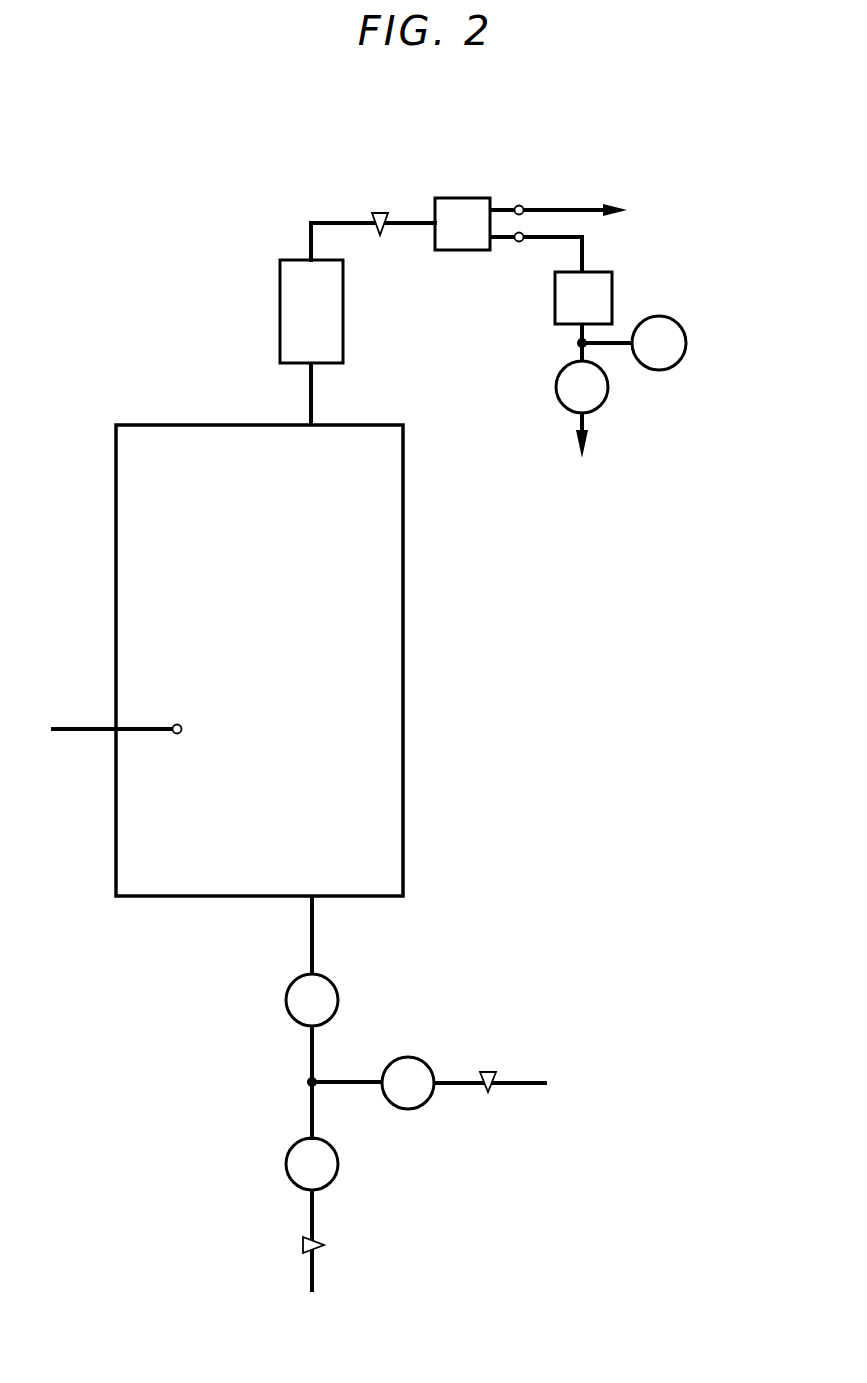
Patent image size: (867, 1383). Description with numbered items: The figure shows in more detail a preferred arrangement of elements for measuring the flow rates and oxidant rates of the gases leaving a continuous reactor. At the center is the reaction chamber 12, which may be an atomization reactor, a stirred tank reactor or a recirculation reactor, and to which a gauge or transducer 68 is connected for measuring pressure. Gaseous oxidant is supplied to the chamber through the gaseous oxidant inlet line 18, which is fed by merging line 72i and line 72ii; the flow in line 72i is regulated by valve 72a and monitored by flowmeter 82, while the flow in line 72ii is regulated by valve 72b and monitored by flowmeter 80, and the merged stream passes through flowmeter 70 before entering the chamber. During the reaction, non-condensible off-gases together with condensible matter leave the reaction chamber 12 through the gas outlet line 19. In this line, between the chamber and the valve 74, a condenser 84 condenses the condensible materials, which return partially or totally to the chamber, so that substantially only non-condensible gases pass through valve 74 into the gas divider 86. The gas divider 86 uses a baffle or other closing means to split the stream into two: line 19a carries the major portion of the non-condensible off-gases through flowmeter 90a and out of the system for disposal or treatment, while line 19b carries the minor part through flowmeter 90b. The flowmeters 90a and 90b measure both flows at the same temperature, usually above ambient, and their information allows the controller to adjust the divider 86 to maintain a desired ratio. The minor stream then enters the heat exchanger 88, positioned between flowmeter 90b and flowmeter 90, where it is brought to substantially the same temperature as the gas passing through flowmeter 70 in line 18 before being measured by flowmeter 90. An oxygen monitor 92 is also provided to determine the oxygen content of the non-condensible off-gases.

The reaction chamber 12 is at (116, 514).
The gaseous oxidant feeding or inlet line 18 is at (312, 950).
The gas outlet line 19 is at (311, 240).
The line 19a is at (577, 210).
The line 19b is at (586, 253).
The gauge or transducer 68 is at (181, 726).
The flowmeter 70 is at (334, 988).
The valve 72a is at (296, 1246).
The valve 72b is at (488, 1066).
The line 72i is at (313, 1267).
The line 72ii is at (523, 1084).
The valve 74 is at (380, 208).
The flowmeter 80 is at (403, 1058).
The flowmeter 82 is at (292, 1146).
The condenser 84 is at (280, 322).
The gas divider 86 is at (463, 198).
The heat exchanger 88 is at (612, 298).
The flowmeter 90 is at (557, 388).
The flowmeter 90a is at (519, 205).
The flowmeter 90b is at (519, 242).
The oxygen monitor 92 is at (686, 352).